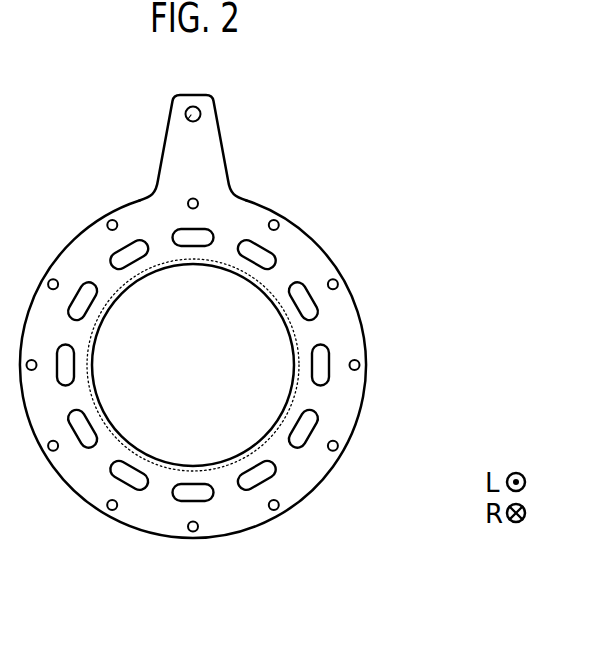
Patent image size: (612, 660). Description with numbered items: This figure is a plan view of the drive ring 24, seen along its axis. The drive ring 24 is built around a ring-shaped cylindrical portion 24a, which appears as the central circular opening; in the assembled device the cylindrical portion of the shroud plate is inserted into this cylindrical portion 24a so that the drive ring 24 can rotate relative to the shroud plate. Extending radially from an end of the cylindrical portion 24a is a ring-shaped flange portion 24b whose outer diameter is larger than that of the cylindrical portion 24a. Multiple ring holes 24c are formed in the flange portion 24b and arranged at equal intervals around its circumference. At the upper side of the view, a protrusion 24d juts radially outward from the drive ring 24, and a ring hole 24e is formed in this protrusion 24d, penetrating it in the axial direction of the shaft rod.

The drive ring 24 is at (320, 240).
The cylindrical portion 24a is at (296, 338).
The flange portion 24b is at (110, 277).
The ring holes 24c is at (274, 511).
The protrusion 24d is at (214, 114).
The ring hole 24e is at (186, 114).